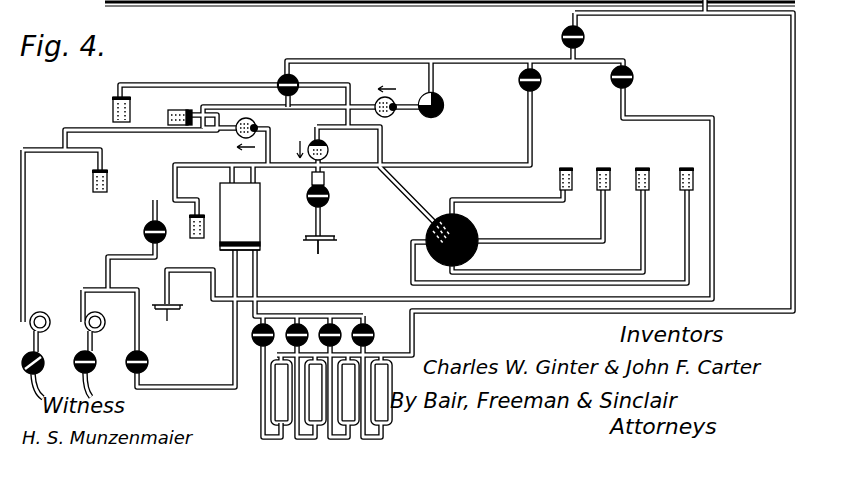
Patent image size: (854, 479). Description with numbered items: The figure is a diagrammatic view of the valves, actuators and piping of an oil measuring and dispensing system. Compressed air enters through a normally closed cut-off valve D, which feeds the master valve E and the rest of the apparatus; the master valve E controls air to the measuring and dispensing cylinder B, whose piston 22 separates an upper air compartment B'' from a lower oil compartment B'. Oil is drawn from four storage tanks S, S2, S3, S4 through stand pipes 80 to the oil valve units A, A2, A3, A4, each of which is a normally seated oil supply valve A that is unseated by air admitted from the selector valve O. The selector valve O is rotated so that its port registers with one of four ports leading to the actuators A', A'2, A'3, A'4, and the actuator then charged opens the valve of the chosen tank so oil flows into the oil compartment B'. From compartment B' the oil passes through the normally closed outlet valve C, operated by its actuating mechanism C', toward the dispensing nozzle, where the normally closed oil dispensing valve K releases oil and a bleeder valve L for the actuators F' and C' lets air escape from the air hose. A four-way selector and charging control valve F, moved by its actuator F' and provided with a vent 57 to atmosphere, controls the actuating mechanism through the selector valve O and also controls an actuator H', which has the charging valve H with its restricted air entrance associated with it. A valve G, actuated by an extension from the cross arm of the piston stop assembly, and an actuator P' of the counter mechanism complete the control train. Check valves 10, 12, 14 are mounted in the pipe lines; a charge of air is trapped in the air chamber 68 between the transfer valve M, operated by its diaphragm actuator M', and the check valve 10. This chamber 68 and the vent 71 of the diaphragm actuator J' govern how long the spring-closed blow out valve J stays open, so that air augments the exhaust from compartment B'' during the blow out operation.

The selector and charging control valve F is at (297, 83).
The vent 57 is at (291, 98).
The actuator H' is at (131, 109).
The actuator F' is at (180, 108).
The check valve 12 is at (257, 122).
The check valve 14 is at (388, 118).
The charging valve H is at (440, 105).
The master valve E is at (541, 80).
The cut-off valve D is at (584, 37).
The blow out valve J is at (630, 77).
The check valve 10 is at (329, 151).
The air chamber 68 is at (311, 180).
The transfer valve M is at (329, 196).
The vent 71 is at (336, 237).
The actuator J' is at (333, 250).
The selector valve O is at (477, 224).
The actuator A' is at (568, 169).
The actuator A'2 is at (607, 169).
The actuator A'3 is at (646, 169).
The actuator A'4 is at (689, 169).
The actuating mechanism C' is at (111, 181).
The valve G is at (143, 231).
The actuator P' is at (201, 210).
The measuring and dispensing cylinder B is at (249, 216).
The air compartment B'' is at (240, 212).
The piston 22 is at (240, 233).
The oil compartment B' is at (251, 246).
The actuator M' is at (175, 314).
The bleeder valve L is at (44, 356).
The oil dispensing valve K is at (96, 356).
The outlet valve C is at (146, 362).
The oil supply valve A is at (260, 344).
The valve unit A2 is at (290, 345).
The valve unit A3 is at (323, 345).
The valve unit A4 is at (356, 345).
The stand pipe 80 is at (258, 390).
The storage tank S is at (281, 392).
The storage tank S2 is at (315, 392).
The storage tank S3 is at (348, 392).
The storage tank S4 is at (381, 392).